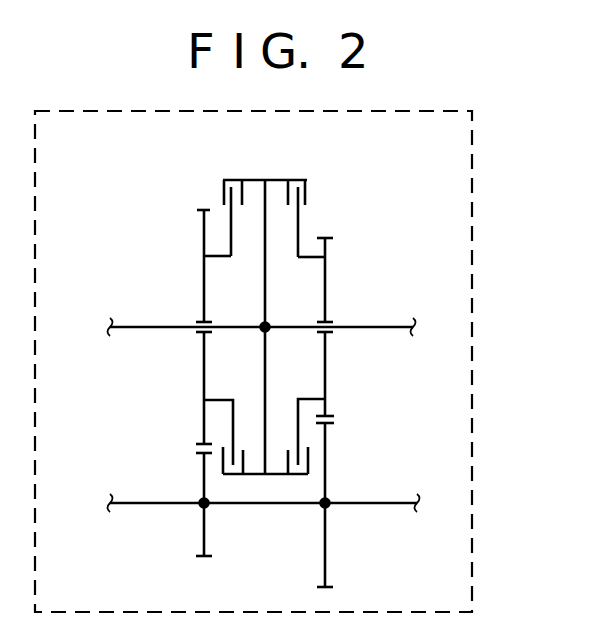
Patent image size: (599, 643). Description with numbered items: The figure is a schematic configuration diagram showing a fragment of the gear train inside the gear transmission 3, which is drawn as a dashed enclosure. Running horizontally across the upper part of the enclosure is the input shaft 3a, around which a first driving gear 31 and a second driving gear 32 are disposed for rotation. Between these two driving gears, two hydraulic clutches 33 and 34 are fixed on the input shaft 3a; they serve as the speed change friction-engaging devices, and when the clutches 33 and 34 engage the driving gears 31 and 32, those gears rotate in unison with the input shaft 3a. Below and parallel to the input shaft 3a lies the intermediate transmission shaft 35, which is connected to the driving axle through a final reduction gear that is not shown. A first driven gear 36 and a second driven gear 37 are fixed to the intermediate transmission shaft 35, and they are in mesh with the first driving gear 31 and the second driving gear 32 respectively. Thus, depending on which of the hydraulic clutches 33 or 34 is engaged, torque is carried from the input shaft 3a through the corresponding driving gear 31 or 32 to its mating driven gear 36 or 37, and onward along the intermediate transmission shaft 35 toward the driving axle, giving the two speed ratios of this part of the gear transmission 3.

The gear transmission 3 is at (473, 218).
The input shaft 3a is at (148, 329).
The first driving gear 31 is at (327, 274).
The second driving gear 32 is at (204, 249).
The hydraulic clutch 33 is at (304, 177).
The hydraulic clutch 34 is at (226, 177).
The intermediate transmission shaft 35 is at (140, 505).
The first driven gear 36 is at (327, 547).
The second driven gear 37 is at (207, 536).